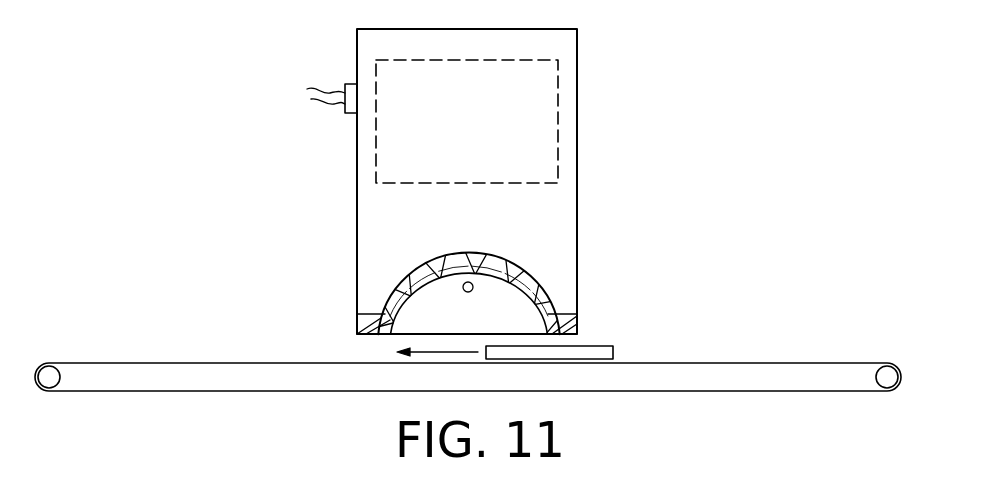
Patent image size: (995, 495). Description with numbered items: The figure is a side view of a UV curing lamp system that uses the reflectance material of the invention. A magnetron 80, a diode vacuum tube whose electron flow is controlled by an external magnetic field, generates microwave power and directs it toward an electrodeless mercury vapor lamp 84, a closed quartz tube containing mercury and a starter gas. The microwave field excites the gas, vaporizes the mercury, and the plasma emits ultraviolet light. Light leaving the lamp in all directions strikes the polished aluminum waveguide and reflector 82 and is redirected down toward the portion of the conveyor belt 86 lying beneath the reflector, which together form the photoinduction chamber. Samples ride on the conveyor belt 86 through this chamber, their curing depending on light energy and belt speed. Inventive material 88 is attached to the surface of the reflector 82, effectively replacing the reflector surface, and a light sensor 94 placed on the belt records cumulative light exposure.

The magnetron 80 is at (558, 108).
The polished aluminum waveguide and reflector 82 is at (543, 293).
The electrodeless mercury vapor lamp 84 is at (465, 292).
The conveyor belt 86 is at (697, 362).
The inventive material 88 is at (579, 331).
The light sensor 94 is at (613, 352).